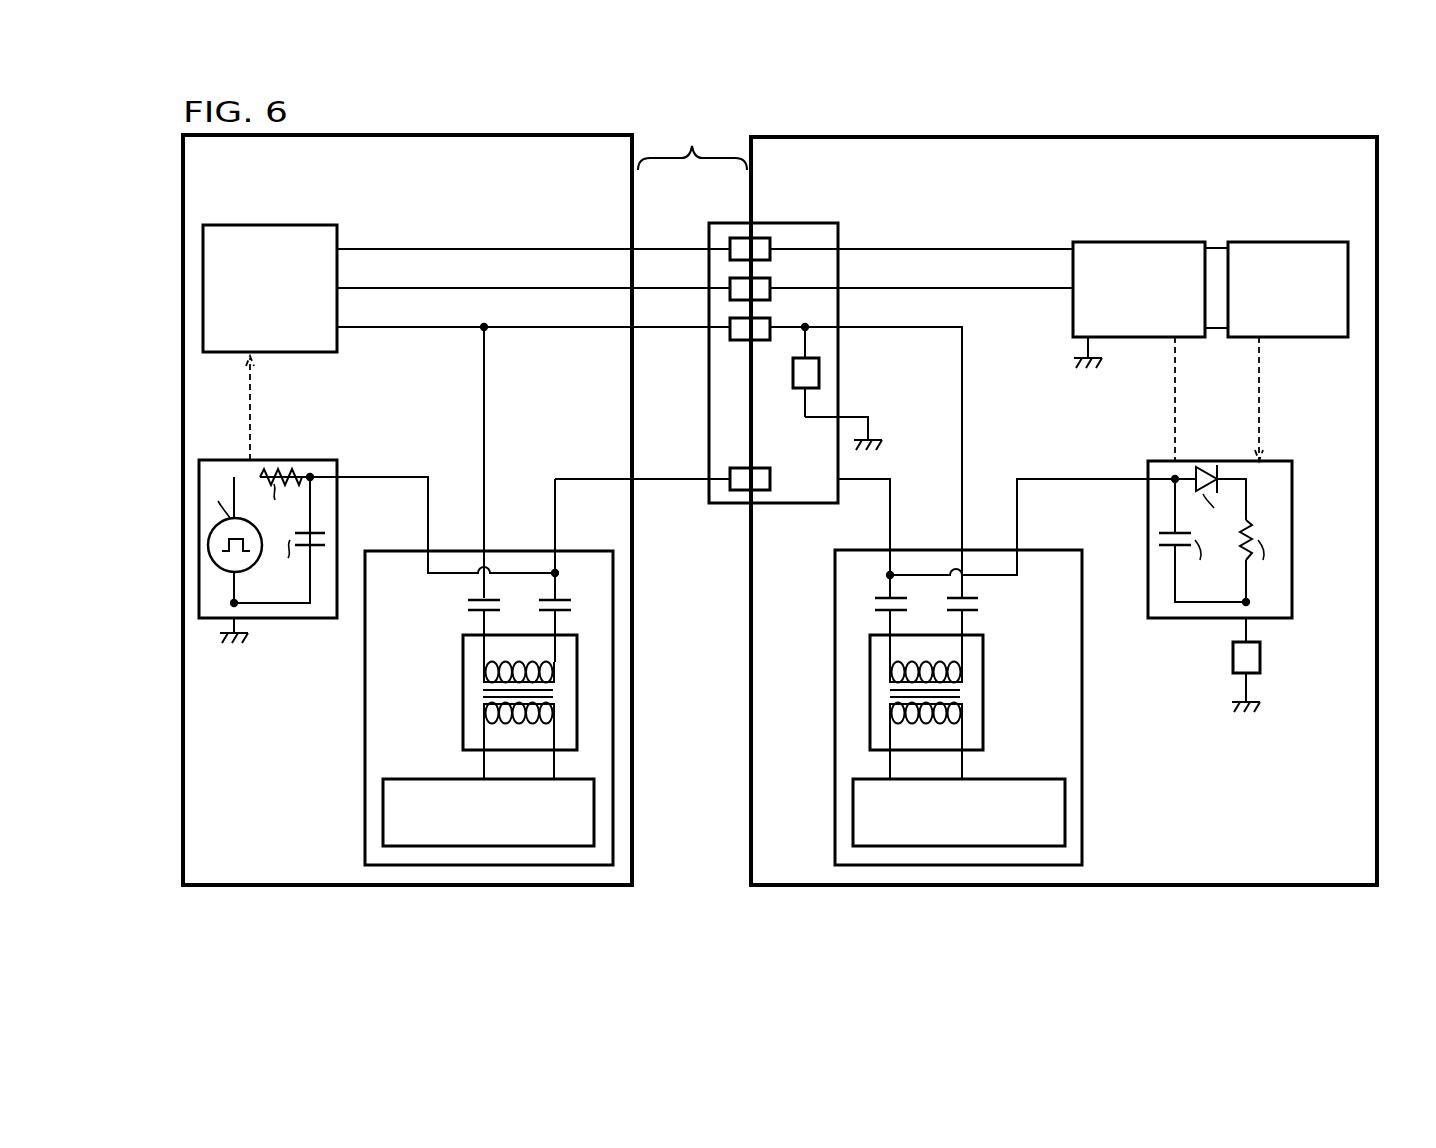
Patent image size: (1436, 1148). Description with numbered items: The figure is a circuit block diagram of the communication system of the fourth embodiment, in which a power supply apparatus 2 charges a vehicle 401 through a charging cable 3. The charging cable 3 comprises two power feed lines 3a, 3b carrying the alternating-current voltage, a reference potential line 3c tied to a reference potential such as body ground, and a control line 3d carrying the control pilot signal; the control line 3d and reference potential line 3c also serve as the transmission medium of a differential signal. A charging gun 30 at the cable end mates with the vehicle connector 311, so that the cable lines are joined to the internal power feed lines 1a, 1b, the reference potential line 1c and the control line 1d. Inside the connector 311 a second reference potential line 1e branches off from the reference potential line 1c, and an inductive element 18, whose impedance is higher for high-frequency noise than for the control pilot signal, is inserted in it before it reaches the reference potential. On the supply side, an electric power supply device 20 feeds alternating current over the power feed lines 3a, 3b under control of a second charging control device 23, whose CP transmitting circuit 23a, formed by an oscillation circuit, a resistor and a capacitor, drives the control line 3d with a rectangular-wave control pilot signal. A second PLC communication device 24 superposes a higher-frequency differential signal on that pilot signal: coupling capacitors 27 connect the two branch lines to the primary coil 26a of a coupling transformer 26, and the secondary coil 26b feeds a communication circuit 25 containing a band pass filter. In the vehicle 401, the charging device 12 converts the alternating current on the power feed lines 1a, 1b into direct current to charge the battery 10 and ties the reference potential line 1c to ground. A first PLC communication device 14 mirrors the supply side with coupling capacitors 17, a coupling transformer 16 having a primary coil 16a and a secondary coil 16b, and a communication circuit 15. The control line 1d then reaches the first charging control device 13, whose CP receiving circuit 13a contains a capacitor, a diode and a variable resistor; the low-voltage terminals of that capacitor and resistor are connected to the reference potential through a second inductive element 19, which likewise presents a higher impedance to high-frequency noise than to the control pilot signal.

The power supply apparatus 2 is at (470, 135).
The vehicle 401 is at (1163, 133).
The charging cable 3 is at (692, 139).
The power feed line 3a is at (645, 248).
The power feed line 3b is at (645, 287).
The reference potential line 3c is at (645, 326).
The control line 3d is at (645, 477).
The charging gun 30 is at (735, 223).
The connector 311 is at (773, 223).
The power feed line 1a is at (888, 248).
The power feed line 1b is at (888, 287).
The reference potential line 1c is at (888, 326).
The control line 1d is at (893, 522).
The second reference potential line 1e is at (852, 418).
The inductive element 18 is at (820, 372).
The electric power supply device 20 is at (252, 225).
The second charging control device 23 is at (282, 460).
The CP transmitting circuit 23a is at (314, 471).
The second PLC communication device 24 is at (400, 551).
The coupling capacitors 27 is at (467, 605).
The coupling transformer 26 is at (463, 690).
The primary coil 26a is at (485, 675).
The secondary coil 26b is at (482, 712).
The communication circuit 25 is at (383, 803).
The charging device 12 is at (1090, 237).
The battery 10 is at (1262, 242).
The first PLC communication device 14 is at (1037, 548).
The coupling capacitors 17 is at (980, 607).
The coupling transformer 16 is at (985, 690).
The primary coil 16a is at (963, 672).
The secondary coil 16b is at (963, 715).
The communication circuit 15 is at (1065, 808).
The first charging control device 13 is at (1272, 461).
The CP receiving circuit 13a is at (1250, 503).
The second inductive element 19 is at (1260, 657).